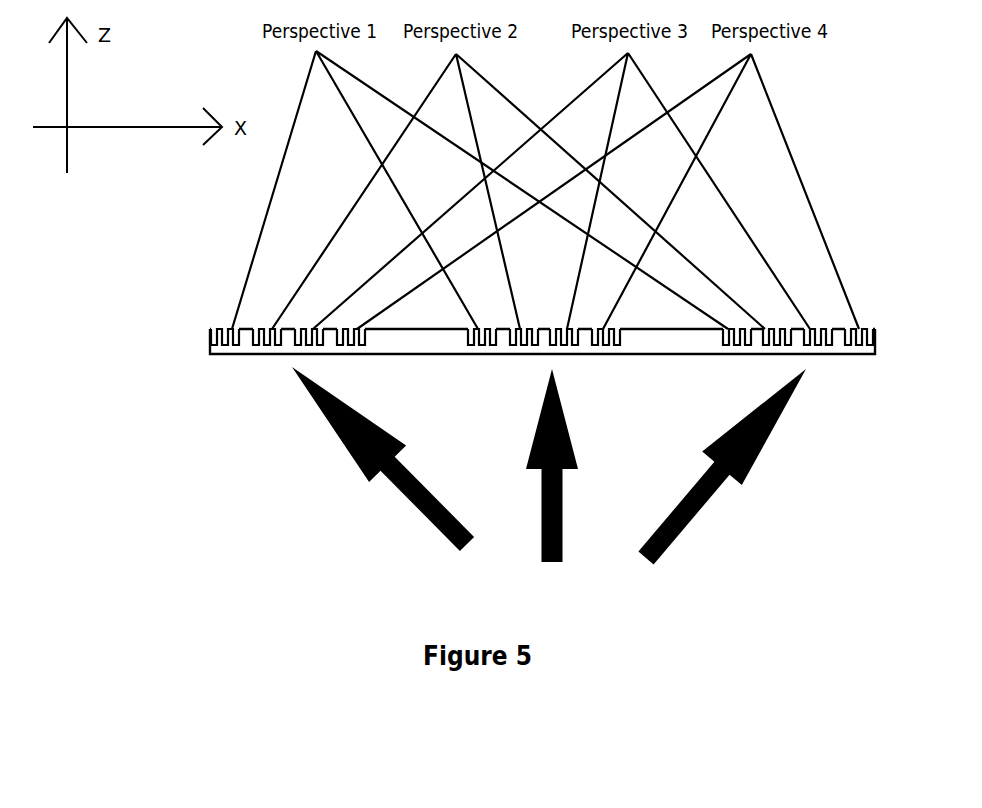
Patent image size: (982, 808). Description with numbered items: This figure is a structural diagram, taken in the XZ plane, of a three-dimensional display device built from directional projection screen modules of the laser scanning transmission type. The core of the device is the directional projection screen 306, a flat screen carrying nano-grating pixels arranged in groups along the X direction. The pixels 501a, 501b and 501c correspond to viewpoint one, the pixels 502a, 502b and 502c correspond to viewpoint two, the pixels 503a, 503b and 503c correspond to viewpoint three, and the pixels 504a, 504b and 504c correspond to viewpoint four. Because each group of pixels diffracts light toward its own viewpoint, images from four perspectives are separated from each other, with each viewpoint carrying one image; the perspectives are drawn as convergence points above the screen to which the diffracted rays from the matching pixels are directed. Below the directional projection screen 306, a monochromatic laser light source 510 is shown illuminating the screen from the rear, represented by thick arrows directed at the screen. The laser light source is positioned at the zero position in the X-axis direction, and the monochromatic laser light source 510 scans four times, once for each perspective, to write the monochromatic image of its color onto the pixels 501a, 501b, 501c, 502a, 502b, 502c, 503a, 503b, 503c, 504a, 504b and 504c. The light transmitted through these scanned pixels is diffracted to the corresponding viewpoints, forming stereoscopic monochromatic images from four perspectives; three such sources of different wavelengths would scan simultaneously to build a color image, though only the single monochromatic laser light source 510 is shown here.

The directional projection screen 306 is at (229, 347).
The pixel 501a is at (222, 328).
The pixel 502a is at (268, 328).
The pixel 503a is at (306, 328).
The pixel 504a is at (346, 348).
The pixel 501b is at (470, 328).
The pixel 502b is at (520, 328).
The pixel 503b is at (568, 328).
The pixel 504b is at (600, 328).
The pixel 501c is at (737, 346).
The pixel 502c is at (765, 328).
The pixel 503c is at (810, 328).
The pixel 504c is at (848, 328).
The monochromatic laser light source 510 is at (549, 487).